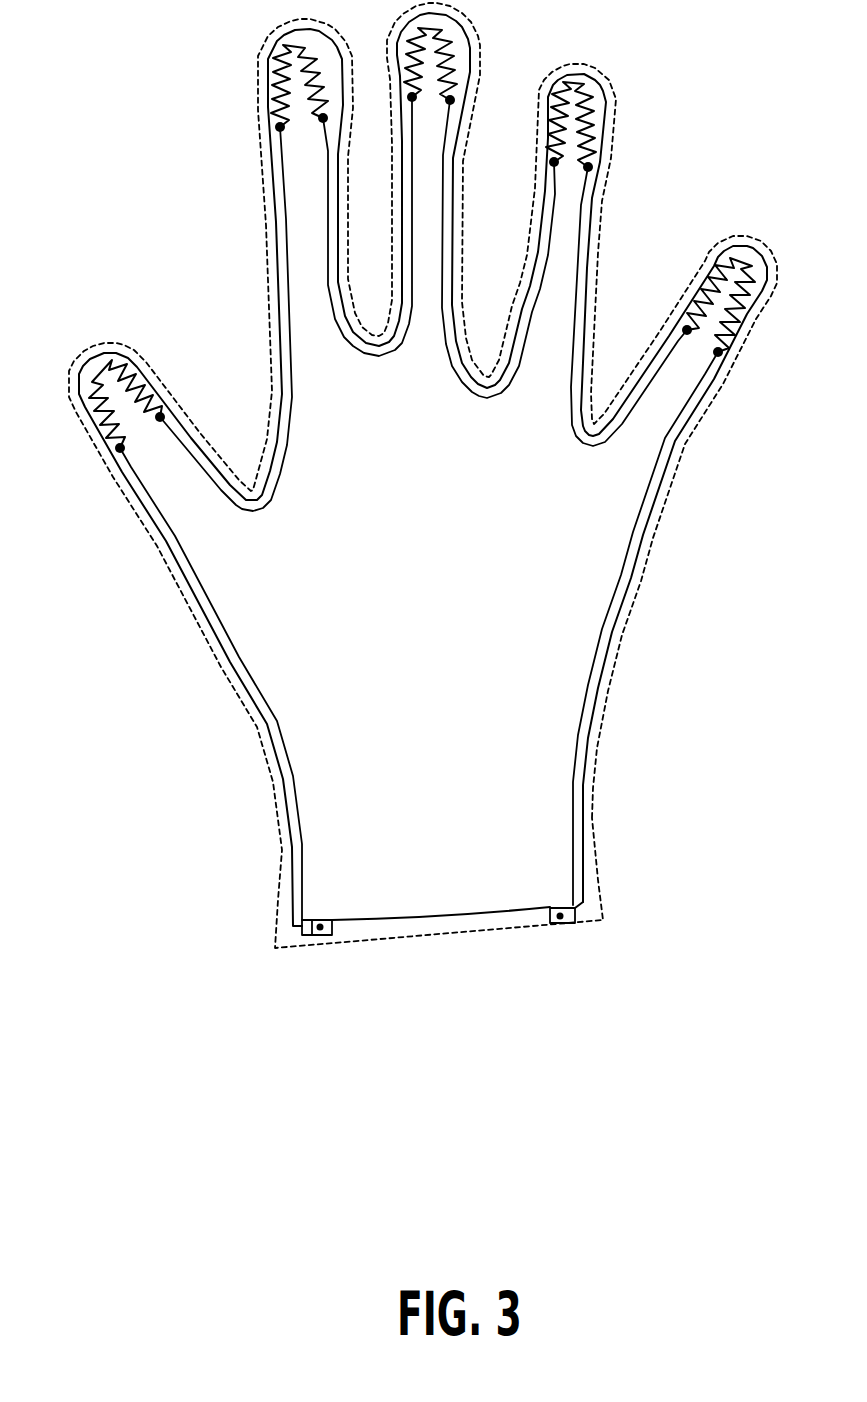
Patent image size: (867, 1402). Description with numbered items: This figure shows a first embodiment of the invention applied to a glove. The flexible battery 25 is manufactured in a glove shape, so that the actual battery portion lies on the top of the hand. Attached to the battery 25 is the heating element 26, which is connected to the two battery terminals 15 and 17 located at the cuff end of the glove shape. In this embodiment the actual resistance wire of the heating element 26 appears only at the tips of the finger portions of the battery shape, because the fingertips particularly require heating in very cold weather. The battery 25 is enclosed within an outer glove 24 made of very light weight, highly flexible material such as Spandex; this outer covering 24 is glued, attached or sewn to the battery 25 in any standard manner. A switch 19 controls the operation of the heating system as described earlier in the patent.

The battery terminal 15 is at (332, 930).
The battery terminal 17 is at (570, 923).
The switch 19 is at (275, 720).
The glove 24 is at (670, 495).
The battery 25 is at (540, 807).
The heating element 26 is at (597, 140).